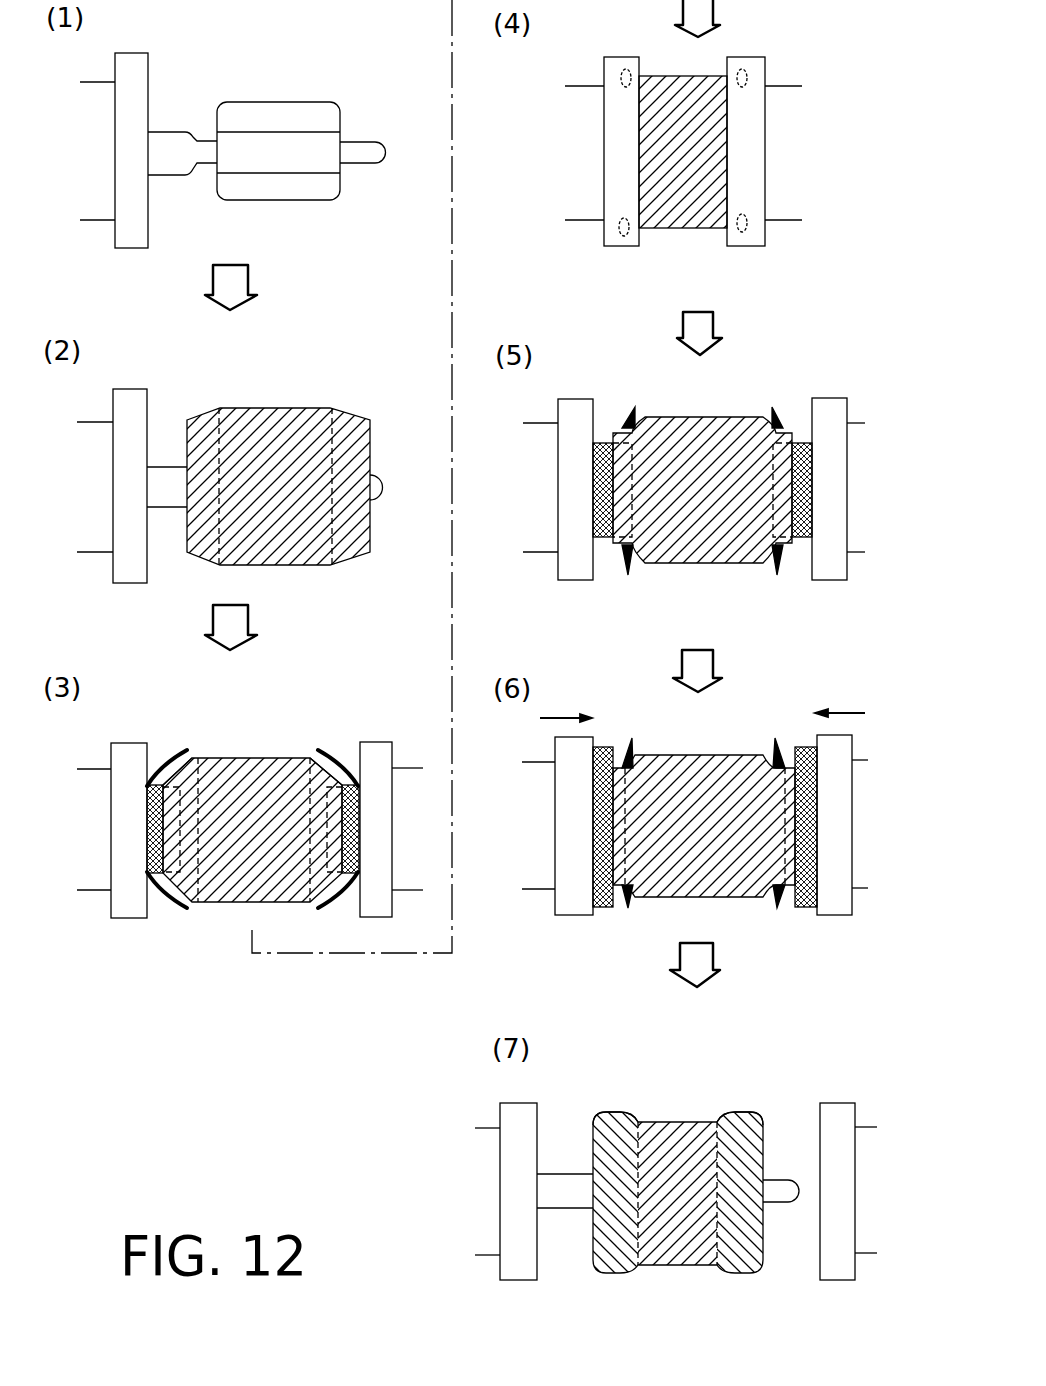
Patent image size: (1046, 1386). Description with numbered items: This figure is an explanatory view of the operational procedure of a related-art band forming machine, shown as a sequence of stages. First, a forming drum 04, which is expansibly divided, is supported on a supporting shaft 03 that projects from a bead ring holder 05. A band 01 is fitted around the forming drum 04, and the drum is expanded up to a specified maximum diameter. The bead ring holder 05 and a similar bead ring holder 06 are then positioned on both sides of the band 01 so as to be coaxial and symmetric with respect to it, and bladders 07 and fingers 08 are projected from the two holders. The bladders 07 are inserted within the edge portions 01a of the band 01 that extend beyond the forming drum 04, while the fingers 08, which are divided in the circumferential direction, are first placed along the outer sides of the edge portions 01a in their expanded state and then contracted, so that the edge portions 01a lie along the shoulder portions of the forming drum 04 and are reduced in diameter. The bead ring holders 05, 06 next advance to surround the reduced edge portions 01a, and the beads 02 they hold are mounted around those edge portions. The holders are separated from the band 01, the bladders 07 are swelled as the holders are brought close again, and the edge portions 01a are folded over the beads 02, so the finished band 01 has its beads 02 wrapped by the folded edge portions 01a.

The band 01 is at (305, 408).
The edge portions 01a is at (180, 763).
The beads 02 is at (748, 80).
The supporting shaft 03 is at (365, 140).
The forming drum 04 is at (278, 102).
The bead ring holder 05 is at (130, 52).
The bead ring holder 06 is at (377, 740).
The bladders 07 is at (143, 872).
The fingers 08 is at (163, 757).